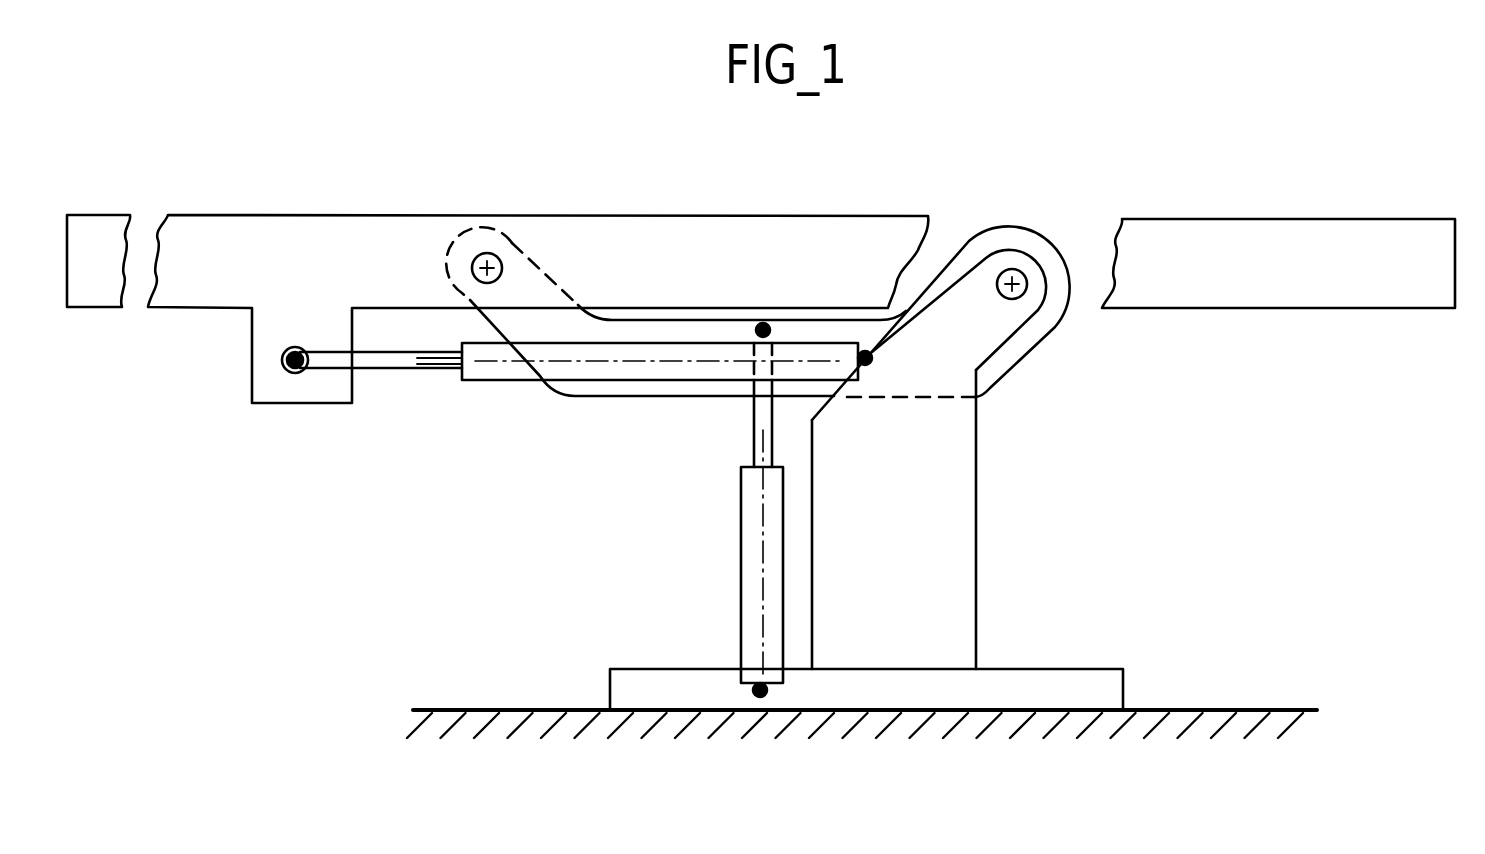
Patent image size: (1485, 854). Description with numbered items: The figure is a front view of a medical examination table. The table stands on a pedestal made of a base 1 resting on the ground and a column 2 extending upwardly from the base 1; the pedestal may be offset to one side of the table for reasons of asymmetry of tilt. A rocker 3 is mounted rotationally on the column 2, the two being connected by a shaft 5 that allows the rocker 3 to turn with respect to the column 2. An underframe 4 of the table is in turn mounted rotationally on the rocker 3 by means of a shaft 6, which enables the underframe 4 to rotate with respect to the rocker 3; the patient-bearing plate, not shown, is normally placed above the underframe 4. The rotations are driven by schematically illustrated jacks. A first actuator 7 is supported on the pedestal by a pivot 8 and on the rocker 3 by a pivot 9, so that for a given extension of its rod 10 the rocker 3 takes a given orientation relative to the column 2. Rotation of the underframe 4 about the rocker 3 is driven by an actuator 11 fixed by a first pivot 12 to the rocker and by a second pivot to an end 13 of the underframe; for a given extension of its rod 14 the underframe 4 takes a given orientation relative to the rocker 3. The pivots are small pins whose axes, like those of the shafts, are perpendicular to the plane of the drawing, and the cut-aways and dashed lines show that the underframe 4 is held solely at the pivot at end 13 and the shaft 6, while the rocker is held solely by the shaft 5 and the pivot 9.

The base 1 is at (1087, 683).
The column 2 is at (965, 588).
The rocker 3 is at (623, 390).
The underframe 4 is at (712, 237).
The shaft 5 is at (1002, 293).
The shaft 6 is at (502, 270).
The first actuator 7 is at (750, 570).
The pivot 8 is at (770, 690).
The pivot 9 is at (768, 323).
The rod 10 is at (755, 430).
The actuator 11 is at (499, 372).
The first pivot 12 is at (893, 310).
The end of the underframe 13 is at (295, 373).
The rod 14 is at (395, 370).